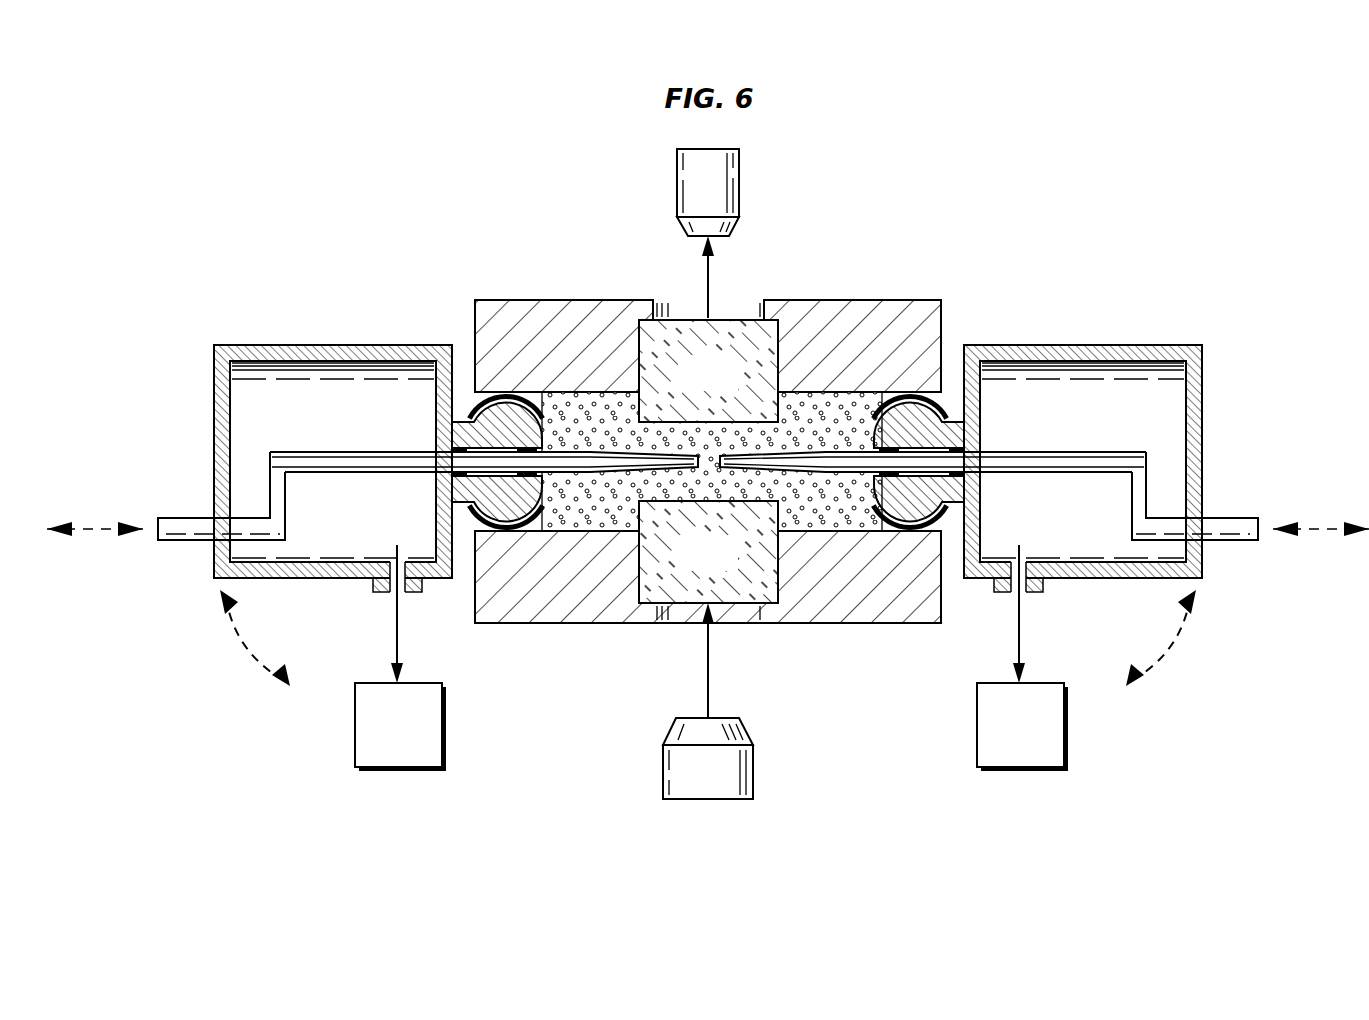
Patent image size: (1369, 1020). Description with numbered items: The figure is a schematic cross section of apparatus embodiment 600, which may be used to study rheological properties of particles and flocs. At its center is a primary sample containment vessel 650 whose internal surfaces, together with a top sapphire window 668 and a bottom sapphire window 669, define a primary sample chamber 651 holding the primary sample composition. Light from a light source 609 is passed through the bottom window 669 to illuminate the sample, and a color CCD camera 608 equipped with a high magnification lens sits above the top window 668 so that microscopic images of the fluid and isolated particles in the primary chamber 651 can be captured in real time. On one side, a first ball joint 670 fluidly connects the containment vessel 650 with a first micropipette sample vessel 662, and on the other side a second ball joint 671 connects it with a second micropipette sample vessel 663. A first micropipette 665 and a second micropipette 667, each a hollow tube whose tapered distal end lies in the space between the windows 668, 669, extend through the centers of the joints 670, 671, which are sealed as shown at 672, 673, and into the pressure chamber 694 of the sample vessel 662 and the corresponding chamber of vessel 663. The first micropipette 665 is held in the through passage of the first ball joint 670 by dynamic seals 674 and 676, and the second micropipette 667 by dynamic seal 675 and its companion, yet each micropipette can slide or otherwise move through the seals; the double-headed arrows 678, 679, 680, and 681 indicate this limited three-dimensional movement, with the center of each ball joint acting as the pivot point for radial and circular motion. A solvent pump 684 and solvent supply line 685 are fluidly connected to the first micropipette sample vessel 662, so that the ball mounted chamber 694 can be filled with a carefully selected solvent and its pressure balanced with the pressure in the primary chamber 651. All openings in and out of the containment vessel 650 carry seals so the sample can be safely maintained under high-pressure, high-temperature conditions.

The apparatus embodiment 600 is at (1002, 256).
The color CCD camera 608 is at (677, 178).
The light source 609 is at (753, 768).
The primary sample containment vessel 650 is at (556, 300).
The primary sample chamber 651 is at (829, 412).
The first micropipette sample vessel 662 is at (1150, 345).
The second micropipette sample vessel 663 is at (266, 345).
The first micropipette 665 is at (1033, 450).
The second micropipette 667 is at (385, 450).
The top sapphire window 668 is at (686, 388).
The bottom sapphire window 669 is at (686, 568).
The first ball joint 670 is at (900, 404).
The second ball joint 671 is at (460, 502).
The joint seal 672 is at (917, 392).
The joint seal 673 is at (503, 398).
The dynamic seal 674 is at (893, 474).
The dynamic seal 675 is at (520, 474).
The dynamic seal 676 is at (955, 502).
The double-headed arrow 678 is at (1328, 529).
The double-headed arrow 679 is at (90, 529).
The double-headed arrow 680 is at (1168, 640).
The double-headed arrow 681 is at (248, 640).
The solvent pump 684 is at (999, 743).
The solvent supply line 685 is at (376, 743).
The pressure chamber 694 is at (1063, 424).